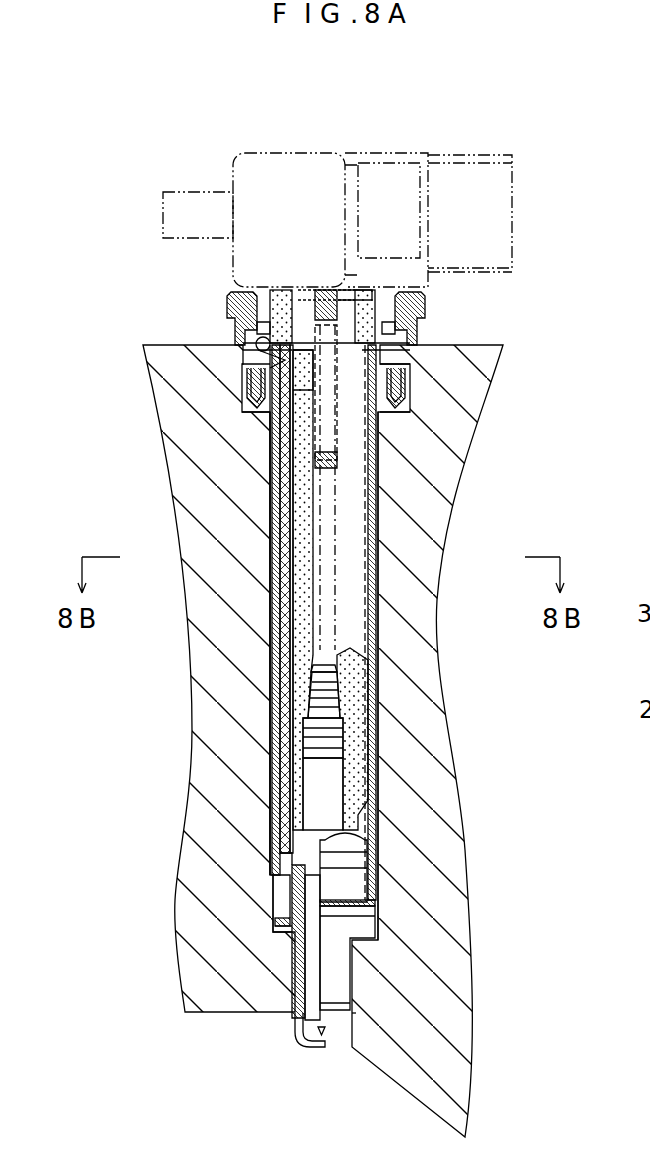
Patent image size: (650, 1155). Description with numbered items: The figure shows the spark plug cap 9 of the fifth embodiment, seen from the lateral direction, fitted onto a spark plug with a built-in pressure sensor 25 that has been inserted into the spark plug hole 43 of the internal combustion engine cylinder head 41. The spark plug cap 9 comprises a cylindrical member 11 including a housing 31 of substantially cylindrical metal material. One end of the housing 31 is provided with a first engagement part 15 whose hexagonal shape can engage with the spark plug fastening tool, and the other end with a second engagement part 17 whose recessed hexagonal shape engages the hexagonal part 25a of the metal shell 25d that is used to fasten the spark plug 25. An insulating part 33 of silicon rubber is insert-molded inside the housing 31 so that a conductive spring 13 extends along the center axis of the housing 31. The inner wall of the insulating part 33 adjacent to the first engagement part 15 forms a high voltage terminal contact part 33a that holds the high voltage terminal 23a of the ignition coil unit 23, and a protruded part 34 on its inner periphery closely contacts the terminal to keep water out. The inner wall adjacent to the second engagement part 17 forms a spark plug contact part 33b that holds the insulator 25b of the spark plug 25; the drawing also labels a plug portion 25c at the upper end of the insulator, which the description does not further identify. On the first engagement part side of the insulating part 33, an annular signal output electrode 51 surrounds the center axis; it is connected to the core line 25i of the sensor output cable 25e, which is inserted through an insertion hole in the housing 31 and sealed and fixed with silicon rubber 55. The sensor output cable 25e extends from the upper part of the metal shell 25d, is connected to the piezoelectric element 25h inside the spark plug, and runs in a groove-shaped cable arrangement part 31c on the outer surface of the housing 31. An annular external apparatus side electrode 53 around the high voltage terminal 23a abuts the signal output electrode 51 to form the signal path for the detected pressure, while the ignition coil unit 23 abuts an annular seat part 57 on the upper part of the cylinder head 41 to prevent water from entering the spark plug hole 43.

The spark plug cap 9 is at (154, 165).
The ignition coil unit 23 is at (402, 153).
The high voltage terminal 23a is at (308, 396).
The protruded part 34 is at (348, 300).
The first engagement part 15 is at (372, 292).
The spring 13 is at (340, 462).
The annular seat part 57 is at (228, 302).
The external apparatus side electrode 53 is at (265, 333).
The silicon rubber 55 is at (255, 336).
The signal output electrode 51 is at (258, 366).
The cylinder head 41 is at (213, 653).
The spark plug hole 43 is at (270, 704).
The cylindrical member 11 is at (378, 575).
The housing 31 is at (352, 630).
The cable arrangement part 31c is at (270, 747).
The insulating part 33 is at (278, 290).
The high voltage terminal contact part 33a is at (292, 463).
The spark plug contact part 33b is at (290, 795).
The second engagement part 17 is at (345, 848).
The spark plug with built-in pressure sensor 25 is at (295, 1047).
The hexagonal part 25a is at (340, 903).
The insulator 25b is at (330, 785).
The spark plug terminal 25c is at (328, 677).
The metal shell 25d is at (355, 920).
The sensor output cable 25e is at (290, 848).
The piezoelectric element 25h is at (272, 926).
The core line 25i is at (266, 345).